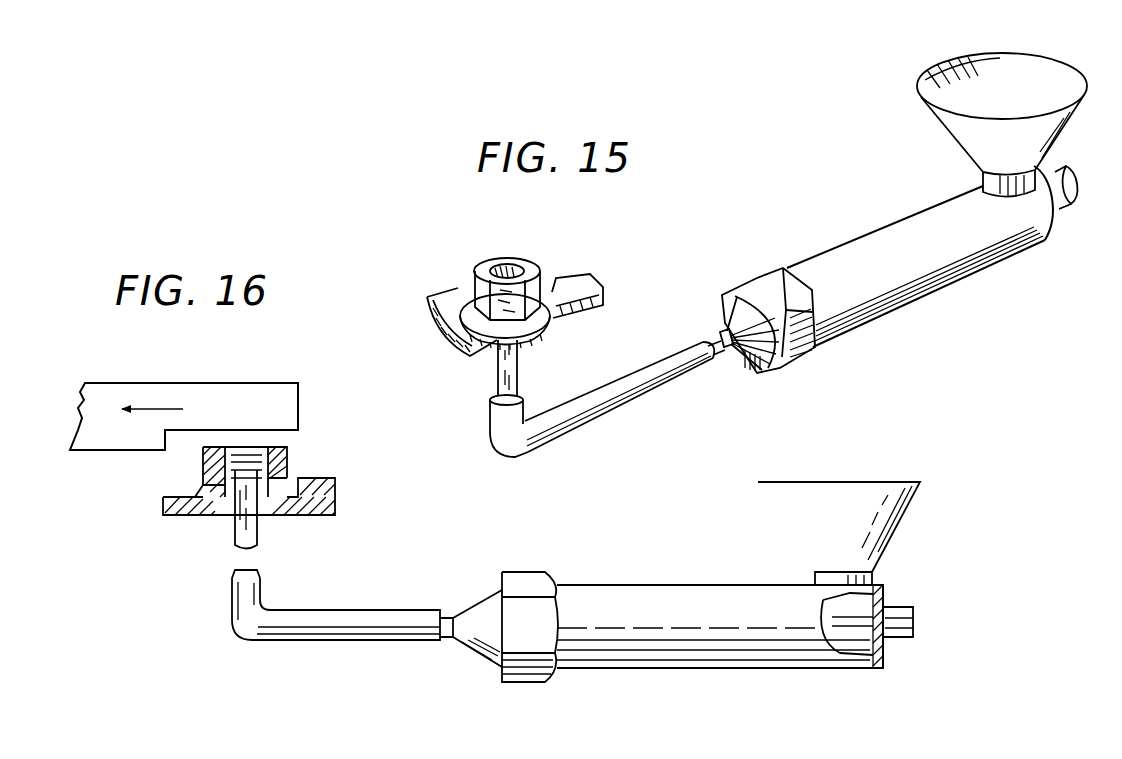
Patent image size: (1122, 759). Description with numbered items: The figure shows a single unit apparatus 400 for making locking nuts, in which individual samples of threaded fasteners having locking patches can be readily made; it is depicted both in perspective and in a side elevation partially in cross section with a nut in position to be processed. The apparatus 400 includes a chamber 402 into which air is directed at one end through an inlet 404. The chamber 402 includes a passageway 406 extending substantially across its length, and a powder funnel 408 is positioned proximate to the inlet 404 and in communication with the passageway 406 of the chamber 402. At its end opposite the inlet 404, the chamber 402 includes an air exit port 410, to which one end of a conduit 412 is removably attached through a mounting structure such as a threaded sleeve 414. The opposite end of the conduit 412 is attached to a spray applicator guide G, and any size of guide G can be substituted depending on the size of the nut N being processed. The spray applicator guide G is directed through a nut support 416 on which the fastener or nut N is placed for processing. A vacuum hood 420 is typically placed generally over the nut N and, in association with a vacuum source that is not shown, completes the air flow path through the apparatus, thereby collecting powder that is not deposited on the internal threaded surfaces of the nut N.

In FIG. 15, the single unit apparatus 400 is at (616, 346).
In FIG. 16, the single unit apparatus 400 is at (352, 580).
In FIG. 15, the chamber 402 is at (788, 270).
In FIG. 16, the chamber 402 is at (600, 585).
In FIG. 15, the inlet 404 is at (1077, 210).
In FIG. 16, the inlet 404 is at (910, 605).
In FIG. 15, the passageway 406 is at (948, 272).
In FIG. 16, the passageway 406 is at (700, 617).
In FIG. 15, the powder funnel 408 is at (937, 118).
In FIG. 16, the powder funnel 408 is at (780, 512).
In FIG. 15, the air exit port 410 is at (737, 292).
In FIG. 16, the air exit port 410 is at (473, 650).
In FIG. 15, the conduit 412 is at (622, 398).
In FIG. 16, the conduit 412 is at (372, 643).
In FIG. 15, the threaded sleeve 414 is at (772, 273).
In FIG. 16, the threaded sleeve 414 is at (530, 572).
In FIG. 15, the nut support 416 is at (568, 317).
In FIG. 16, the nut support 416 is at (307, 517).
In FIG. 16, the vacuum hood 420 is at (300, 400).
In FIG. 15, the nut N is at (538, 257).
In FIG. 16, the nut N is at (287, 460).
In FIG. 15, the spray applicator guide G is at (498, 373).
In FIG. 16, the spray applicator guide G is at (233, 528).